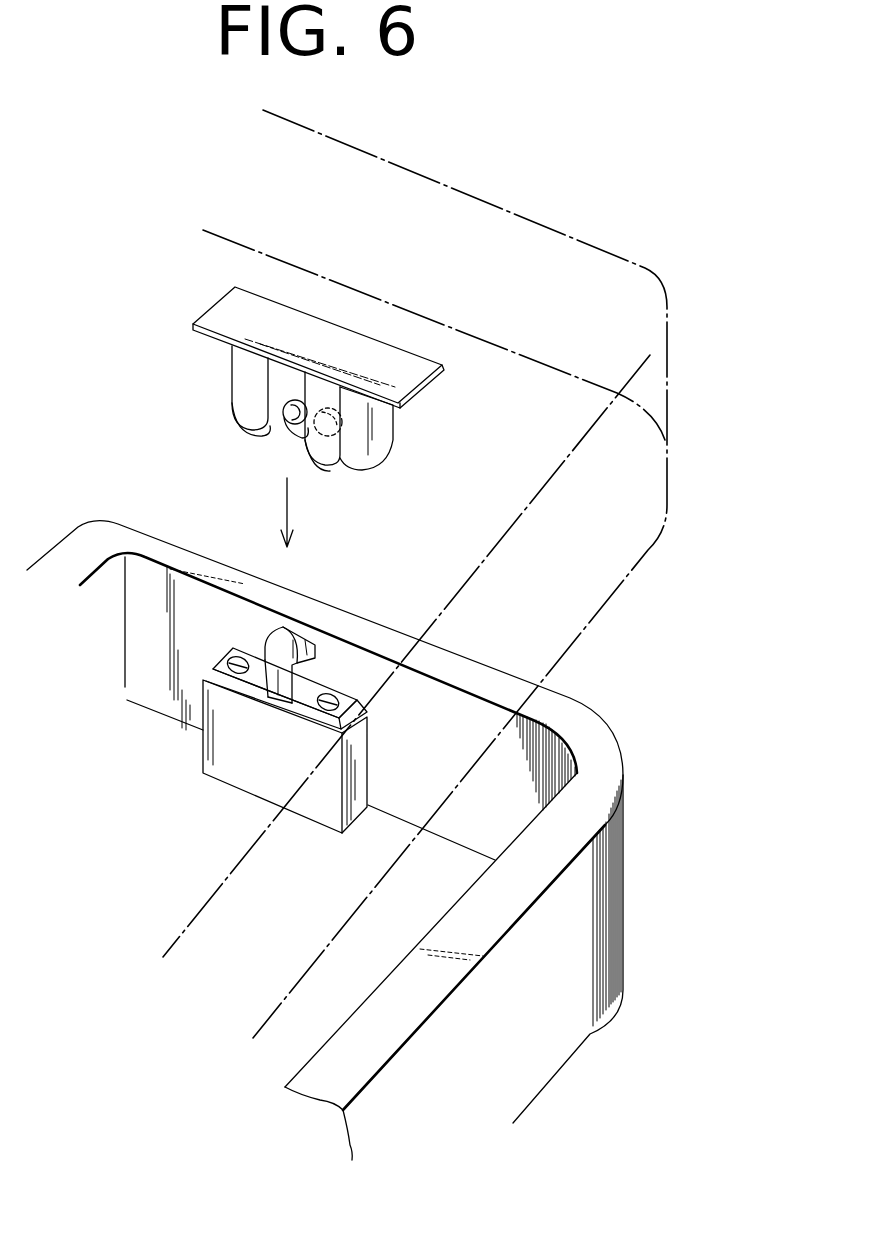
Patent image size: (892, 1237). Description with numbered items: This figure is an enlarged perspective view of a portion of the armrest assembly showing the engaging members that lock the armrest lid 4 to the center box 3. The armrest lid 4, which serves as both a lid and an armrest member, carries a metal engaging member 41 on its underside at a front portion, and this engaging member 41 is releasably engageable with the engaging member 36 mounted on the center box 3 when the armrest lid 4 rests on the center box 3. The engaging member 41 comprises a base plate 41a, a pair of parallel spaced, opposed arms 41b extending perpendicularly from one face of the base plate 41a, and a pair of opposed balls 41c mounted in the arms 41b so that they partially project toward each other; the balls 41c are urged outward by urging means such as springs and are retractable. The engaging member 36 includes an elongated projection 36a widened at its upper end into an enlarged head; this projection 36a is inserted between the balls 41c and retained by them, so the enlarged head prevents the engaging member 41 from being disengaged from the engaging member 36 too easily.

The center box 3 is at (585, 730).
The armrest lid 4 is at (667, 388).
The engaging member 36 is at (218, 653).
The elongated projection 36a is at (296, 640).
The engaging member 41 is at (339, 373).
The base plate 41a is at (337, 337).
The arm 41b is at (248, 398).
The ball 41c is at (287, 413).